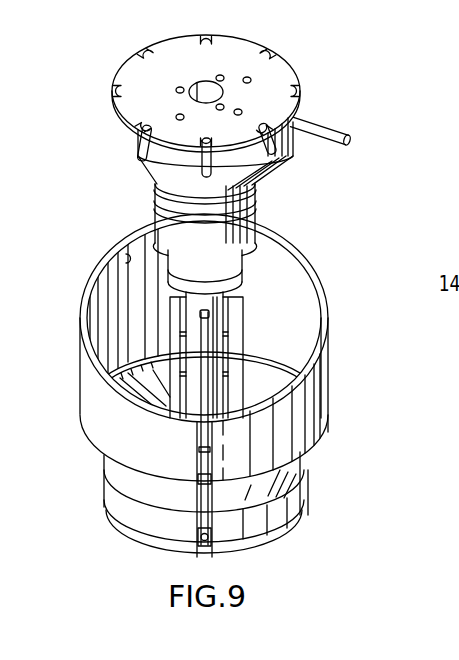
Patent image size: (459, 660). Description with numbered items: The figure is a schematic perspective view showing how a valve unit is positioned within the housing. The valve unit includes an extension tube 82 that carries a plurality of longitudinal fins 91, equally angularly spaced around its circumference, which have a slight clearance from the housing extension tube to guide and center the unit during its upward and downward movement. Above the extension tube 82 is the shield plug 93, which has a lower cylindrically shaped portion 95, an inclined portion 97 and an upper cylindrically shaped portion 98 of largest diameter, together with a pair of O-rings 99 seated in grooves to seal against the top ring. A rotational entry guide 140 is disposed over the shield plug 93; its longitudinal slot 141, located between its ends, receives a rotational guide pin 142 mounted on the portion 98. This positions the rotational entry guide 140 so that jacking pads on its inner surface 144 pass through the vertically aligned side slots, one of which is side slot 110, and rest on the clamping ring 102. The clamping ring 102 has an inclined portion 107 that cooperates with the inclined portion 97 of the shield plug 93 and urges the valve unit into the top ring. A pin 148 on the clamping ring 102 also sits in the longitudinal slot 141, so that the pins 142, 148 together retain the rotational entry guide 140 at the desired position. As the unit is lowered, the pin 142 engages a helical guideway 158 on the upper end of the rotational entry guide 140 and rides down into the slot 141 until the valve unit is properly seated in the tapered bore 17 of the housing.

The tapered bore 17 is at (246, 49).
The shield plug 93 is at (301, 72).
The side slot 110 is at (147, 52).
The upper cylindrically shaped portion 98 is at (117, 126).
The rotational guide pin 142 is at (342, 128).
The inclined portion 97 is at (263, 167).
The O-rings 99 is at (156, 208).
The lower cylindrically shaped portion 95 is at (247, 247).
The inner surface 144 is at (128, 254).
The helical guideway 158 is at (90, 298).
The extension tube 82 is at (229, 320).
The longitudinal fins 91 is at (233, 340).
The inclined portion 107 is at (274, 378).
The rotational entry guide 140 is at (330, 393).
The longitudinal slot 141 is at (199, 449).
The clamping ring 102 is at (308, 504).
The pin 148 is at (196, 542).